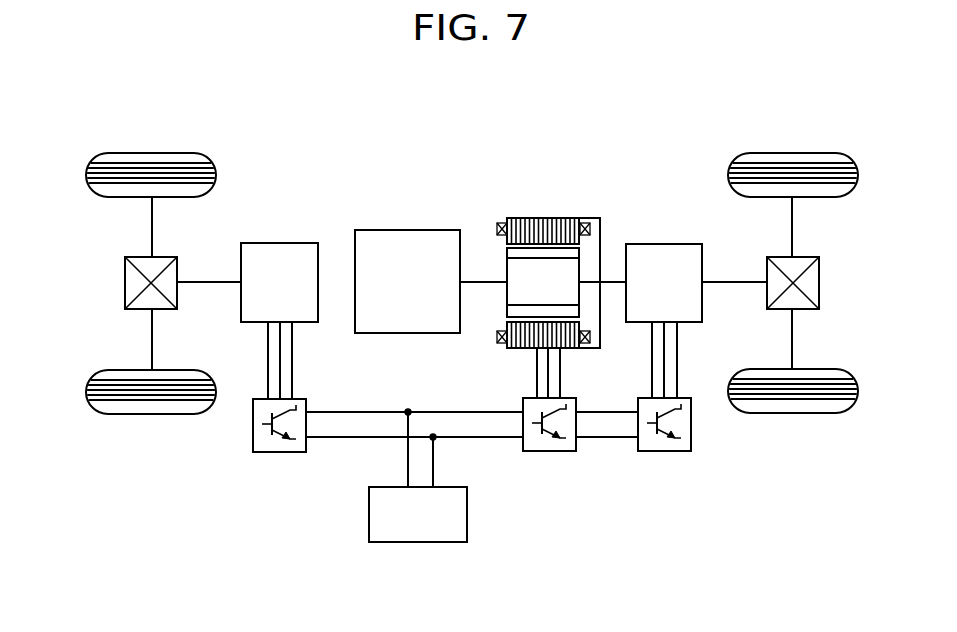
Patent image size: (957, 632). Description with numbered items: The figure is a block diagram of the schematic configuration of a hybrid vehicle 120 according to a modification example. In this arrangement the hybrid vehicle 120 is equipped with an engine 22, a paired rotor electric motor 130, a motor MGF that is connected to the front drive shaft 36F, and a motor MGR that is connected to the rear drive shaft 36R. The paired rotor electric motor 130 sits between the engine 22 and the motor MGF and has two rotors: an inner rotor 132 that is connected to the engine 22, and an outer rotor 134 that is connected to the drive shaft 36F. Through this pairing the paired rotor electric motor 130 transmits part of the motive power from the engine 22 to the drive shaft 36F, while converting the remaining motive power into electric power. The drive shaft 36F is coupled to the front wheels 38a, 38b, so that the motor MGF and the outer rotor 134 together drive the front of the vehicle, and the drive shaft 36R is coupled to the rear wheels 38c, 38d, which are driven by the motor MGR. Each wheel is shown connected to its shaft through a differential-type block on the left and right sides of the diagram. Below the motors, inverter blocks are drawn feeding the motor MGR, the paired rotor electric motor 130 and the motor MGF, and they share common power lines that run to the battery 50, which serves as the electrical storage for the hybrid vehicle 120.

The hybrid vehicle 120 is at (607, 128).
The engine 22 is at (408, 230).
The paired rotor electric motor 130 is at (536, 239).
The inner rotor 132 is at (507, 270).
The outer rotor 134 is at (552, 218).
The drive shaft 36R is at (205, 279).
The drive shaft 36F is at (729, 279).
The front wheel 38a is at (791, 153).
The front wheel 38b is at (793, 413).
The rear wheel 38c is at (152, 153).
The rear wheel 38d is at (153, 413).
The battery 50 is at (468, 512).
The motor MGR is at (280, 243).
The motor MGF is at (663, 244).